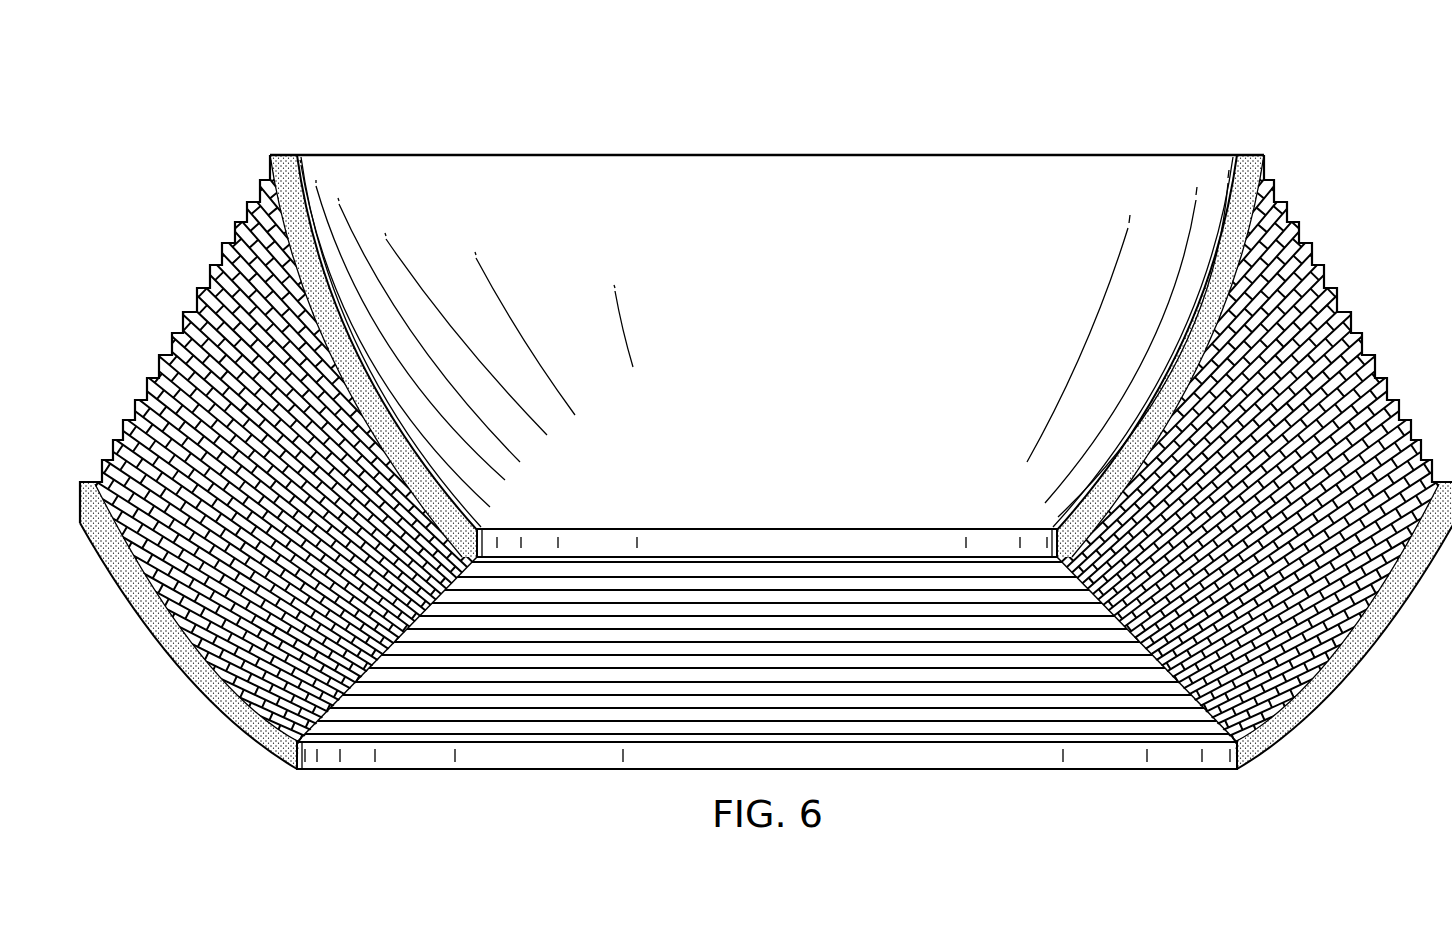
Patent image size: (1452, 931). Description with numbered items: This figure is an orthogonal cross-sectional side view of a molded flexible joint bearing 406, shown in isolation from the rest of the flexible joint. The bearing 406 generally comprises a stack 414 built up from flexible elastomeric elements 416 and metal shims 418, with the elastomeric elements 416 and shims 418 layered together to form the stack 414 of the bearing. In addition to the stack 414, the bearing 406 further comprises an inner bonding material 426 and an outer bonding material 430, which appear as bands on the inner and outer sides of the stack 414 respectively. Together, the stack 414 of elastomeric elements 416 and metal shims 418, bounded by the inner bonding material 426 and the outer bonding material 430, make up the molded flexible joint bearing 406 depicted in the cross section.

The bearing 406 is at (726, 441).
The stack 414 is at (188, 266).
The flexible elastomeric elements 416 is at (256, 196).
The metal shims 418 is at (185, 333).
The inner bonding material 426 is at (283, 154).
The outer bonding material 430 is at (207, 684).